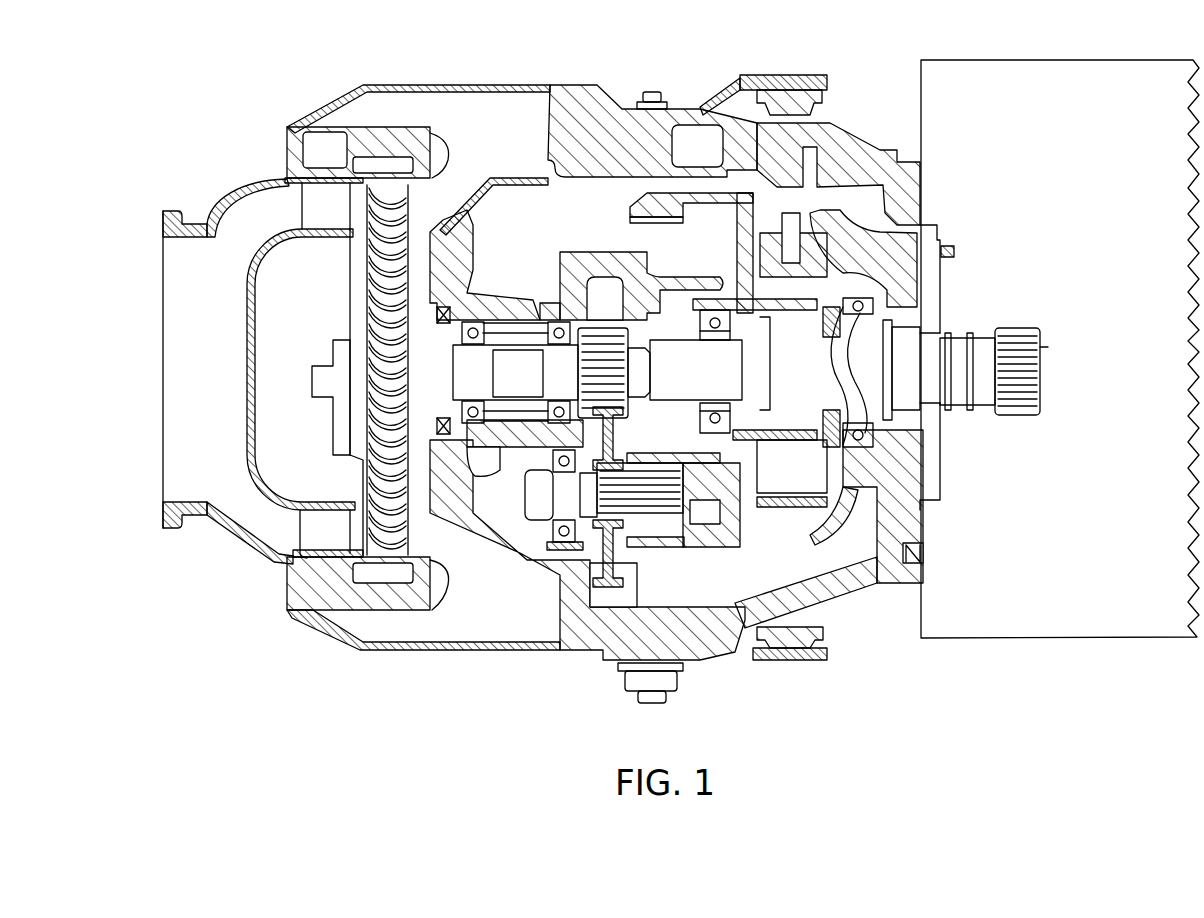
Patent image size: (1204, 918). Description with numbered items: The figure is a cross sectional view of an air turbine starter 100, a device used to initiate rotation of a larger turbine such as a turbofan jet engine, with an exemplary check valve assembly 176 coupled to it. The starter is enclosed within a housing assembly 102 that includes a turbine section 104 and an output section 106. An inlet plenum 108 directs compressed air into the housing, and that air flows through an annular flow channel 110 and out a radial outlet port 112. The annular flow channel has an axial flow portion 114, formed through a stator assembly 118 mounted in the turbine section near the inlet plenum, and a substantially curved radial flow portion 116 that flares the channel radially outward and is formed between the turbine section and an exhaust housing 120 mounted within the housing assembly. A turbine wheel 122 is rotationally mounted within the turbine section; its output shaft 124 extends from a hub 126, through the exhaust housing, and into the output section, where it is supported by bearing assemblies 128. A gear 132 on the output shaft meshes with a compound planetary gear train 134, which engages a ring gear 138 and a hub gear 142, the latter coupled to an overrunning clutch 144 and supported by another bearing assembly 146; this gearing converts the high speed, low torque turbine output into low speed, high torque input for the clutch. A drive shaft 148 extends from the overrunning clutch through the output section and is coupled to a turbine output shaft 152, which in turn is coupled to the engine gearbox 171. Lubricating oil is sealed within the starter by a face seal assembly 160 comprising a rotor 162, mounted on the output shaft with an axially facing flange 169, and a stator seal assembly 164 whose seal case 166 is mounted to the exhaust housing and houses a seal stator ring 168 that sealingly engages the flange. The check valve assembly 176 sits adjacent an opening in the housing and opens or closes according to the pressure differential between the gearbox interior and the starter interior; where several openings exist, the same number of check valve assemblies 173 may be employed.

The air turbine starter 100 is at (708, 72).
The housing assembly 102 is at (858, 128).
The turbine section 104 is at (405, 82).
The output section 106 is at (921, 202).
The inlet plenum 108 is at (165, 293).
The annular flow channel 110 is at (183, 372).
The radial outlet port 112 is at (486, 143).
The axial flow portion 114 is at (304, 215).
The radial flow portion 116 is at (407, 208).
The stator assembly 118 is at (247, 435).
The exhaust housing 120 is at (545, 180).
The turbine wheel 122 is at (330, 322).
The output shaft 124 is at (640, 378).
The hub 126 is at (348, 420).
The bearing assemblies 128 is at (487, 323).
The gear 132 is at (620, 350).
The compound planetary gear train 134 is at (640, 482).
The ring gear 138 is at (725, 540).
The hub gear 142 is at (773, 430).
The overrunning clutch 144 is at (774, 475).
The bearing assembly 146 is at (733, 332).
The drive shaft 148 is at (908, 398).
The turbine output shaft 152 is at (1048, 340).
The face seal assembly 160 is at (388, 300).
The rotor 162 is at (457, 313).
The stator seal assembly 164 is at (417, 292).
The seal case 166 is at (480, 462).
The seal stator ring 168 is at (395, 430).
The axially facing flange 169 is at (395, 322).
The gearbox 171 is at (1055, 634).
The check valve assemblies 173 is at (925, 550).
The check valve assembly 176 is at (962, 246).